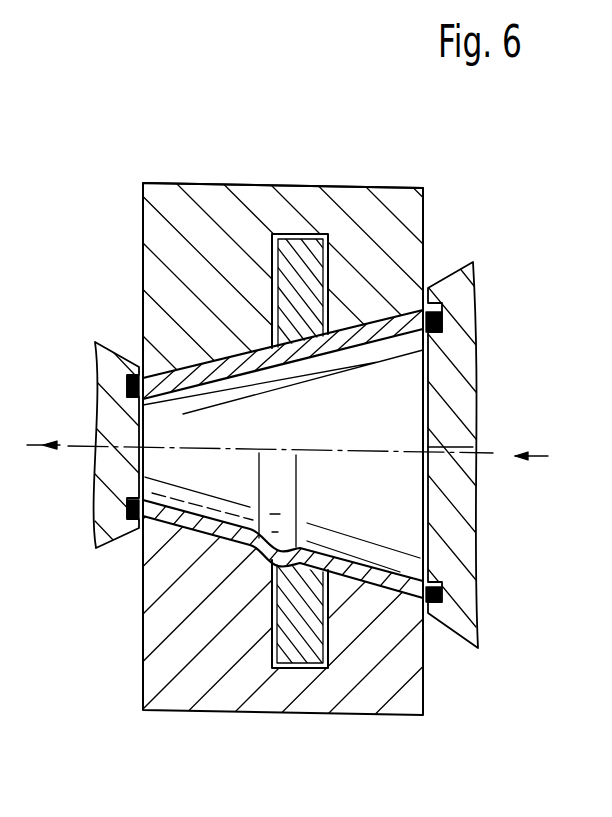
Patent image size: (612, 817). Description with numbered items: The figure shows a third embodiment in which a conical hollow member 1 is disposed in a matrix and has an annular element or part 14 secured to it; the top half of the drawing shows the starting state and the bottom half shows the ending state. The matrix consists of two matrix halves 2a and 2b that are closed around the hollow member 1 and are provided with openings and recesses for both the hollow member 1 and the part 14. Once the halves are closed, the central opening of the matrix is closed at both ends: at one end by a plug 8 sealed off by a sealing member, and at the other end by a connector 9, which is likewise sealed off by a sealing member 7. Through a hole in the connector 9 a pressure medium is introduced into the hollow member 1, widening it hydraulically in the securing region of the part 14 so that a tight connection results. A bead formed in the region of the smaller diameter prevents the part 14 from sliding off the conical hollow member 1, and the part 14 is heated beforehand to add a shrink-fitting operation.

The hollow member 1 is at (397, 332).
The matrix half 2a is at (170, 665).
The matrix half 2b is at (165, 242).
The sealing member 7 is at (127, 517).
The plug 8 is at (113, 418).
The connector 9 is at (463, 350).
The annular element or part 14 is at (315, 652).